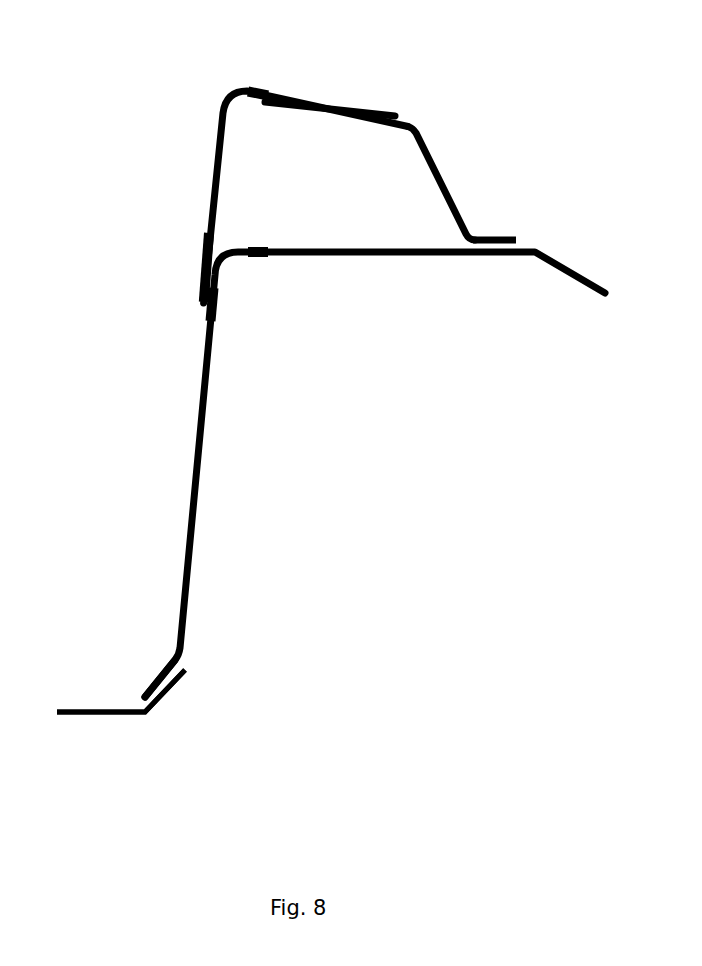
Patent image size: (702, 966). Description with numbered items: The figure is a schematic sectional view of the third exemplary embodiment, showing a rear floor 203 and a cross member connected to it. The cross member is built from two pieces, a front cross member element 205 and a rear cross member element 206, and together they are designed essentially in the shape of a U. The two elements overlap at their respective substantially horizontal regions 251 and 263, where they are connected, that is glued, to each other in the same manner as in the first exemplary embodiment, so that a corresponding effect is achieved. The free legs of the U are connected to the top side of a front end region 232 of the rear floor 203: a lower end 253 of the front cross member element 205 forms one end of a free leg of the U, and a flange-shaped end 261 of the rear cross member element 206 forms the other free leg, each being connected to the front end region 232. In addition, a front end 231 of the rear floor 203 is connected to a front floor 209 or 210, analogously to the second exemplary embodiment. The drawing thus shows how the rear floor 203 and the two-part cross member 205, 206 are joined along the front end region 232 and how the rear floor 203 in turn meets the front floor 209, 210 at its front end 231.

The rear floor 203 is at (450, 300).
The front cross member element 205 is at (190, 154).
The rear cross member element 206 is at (450, 173).
The front floor 209 is at (88, 715).
The front floor 210 is at (121, 691).
The front end of the rear floor 231 is at (150, 682).
The front end region of the rear floor 232 is at (268, 253).
The substantially horizontal region of the front cross member element 251 is at (323, 98).
The lower end of the front cross member element 253 is at (203, 282).
The flange-shaped end of the rear cross member element 261 is at (518, 238).
The substantially horizontal region of the rear cross member element 263 is at (308, 113).